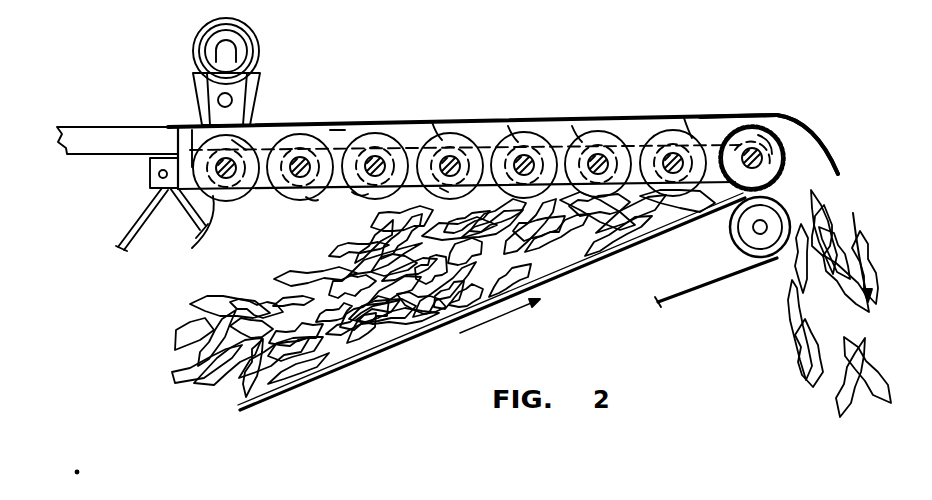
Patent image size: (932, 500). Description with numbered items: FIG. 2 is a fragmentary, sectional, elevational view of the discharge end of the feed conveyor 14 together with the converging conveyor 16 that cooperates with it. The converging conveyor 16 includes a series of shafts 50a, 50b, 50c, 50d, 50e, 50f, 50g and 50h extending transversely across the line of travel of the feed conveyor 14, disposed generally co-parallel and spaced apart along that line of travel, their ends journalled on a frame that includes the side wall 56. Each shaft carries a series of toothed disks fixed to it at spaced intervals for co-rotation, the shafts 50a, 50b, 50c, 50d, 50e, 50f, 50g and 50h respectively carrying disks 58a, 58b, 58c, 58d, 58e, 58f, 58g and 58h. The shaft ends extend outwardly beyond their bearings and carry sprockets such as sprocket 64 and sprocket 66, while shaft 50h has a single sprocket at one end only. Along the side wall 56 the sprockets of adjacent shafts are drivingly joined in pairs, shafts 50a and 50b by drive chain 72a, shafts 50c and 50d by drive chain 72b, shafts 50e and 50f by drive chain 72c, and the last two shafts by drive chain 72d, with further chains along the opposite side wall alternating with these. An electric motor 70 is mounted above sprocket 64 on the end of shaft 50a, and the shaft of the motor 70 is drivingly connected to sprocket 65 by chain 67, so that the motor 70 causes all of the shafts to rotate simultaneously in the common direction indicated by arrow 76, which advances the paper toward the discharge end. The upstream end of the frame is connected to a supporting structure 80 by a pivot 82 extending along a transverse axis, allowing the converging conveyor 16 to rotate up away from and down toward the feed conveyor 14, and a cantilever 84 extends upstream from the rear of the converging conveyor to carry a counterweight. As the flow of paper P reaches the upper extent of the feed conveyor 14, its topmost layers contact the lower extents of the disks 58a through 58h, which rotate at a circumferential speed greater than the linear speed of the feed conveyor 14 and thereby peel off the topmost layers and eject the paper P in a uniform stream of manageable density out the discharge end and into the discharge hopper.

The feed conveyor 14 is at (430, 329).
The converging conveyor 16 is at (720, 113).
The shaft 50a is at (230, 179).
The shaft 50b is at (300, 155).
The shaft 50c is at (376, 154).
The shaft 50d is at (451, 154).
The shaft 50e is at (527, 153).
The shaft 50f is at (601, 152).
The shaft 50g is at (672, 151).
The shaft 50h is at (748, 146).
The side wall 56 is at (337, 135).
The disk 58a is at (199, 238).
The disk 58b is at (310, 198).
The disk 58c is at (357, 194).
The disk 58d is at (437, 123).
The disk 58e is at (513, 127).
The disk 58f is at (577, 127).
The disk 58g is at (688, 118).
The disk 58h is at (778, 141).
The sprocket 64 is at (443, 190).
The sprocket 65 is at (234, 143).
The sprocket 66 is at (672, 0).
The chain 67 is at (175, 127).
The electric motor 70 is at (205, 32).
The drive chain 72a is at (258, 0).
The drive chain 72b is at (408, 0).
The drive chain 72c is at (545, 0).
The drive chain 72d is at (745, 0).
The arrow 76 is at (778, 161).
The supporting structure 80 is at (128, 218).
The pivot 82 is at (150, 171).
The cantilever 84 is at (97, 127).
The paper P is at (232, 307).